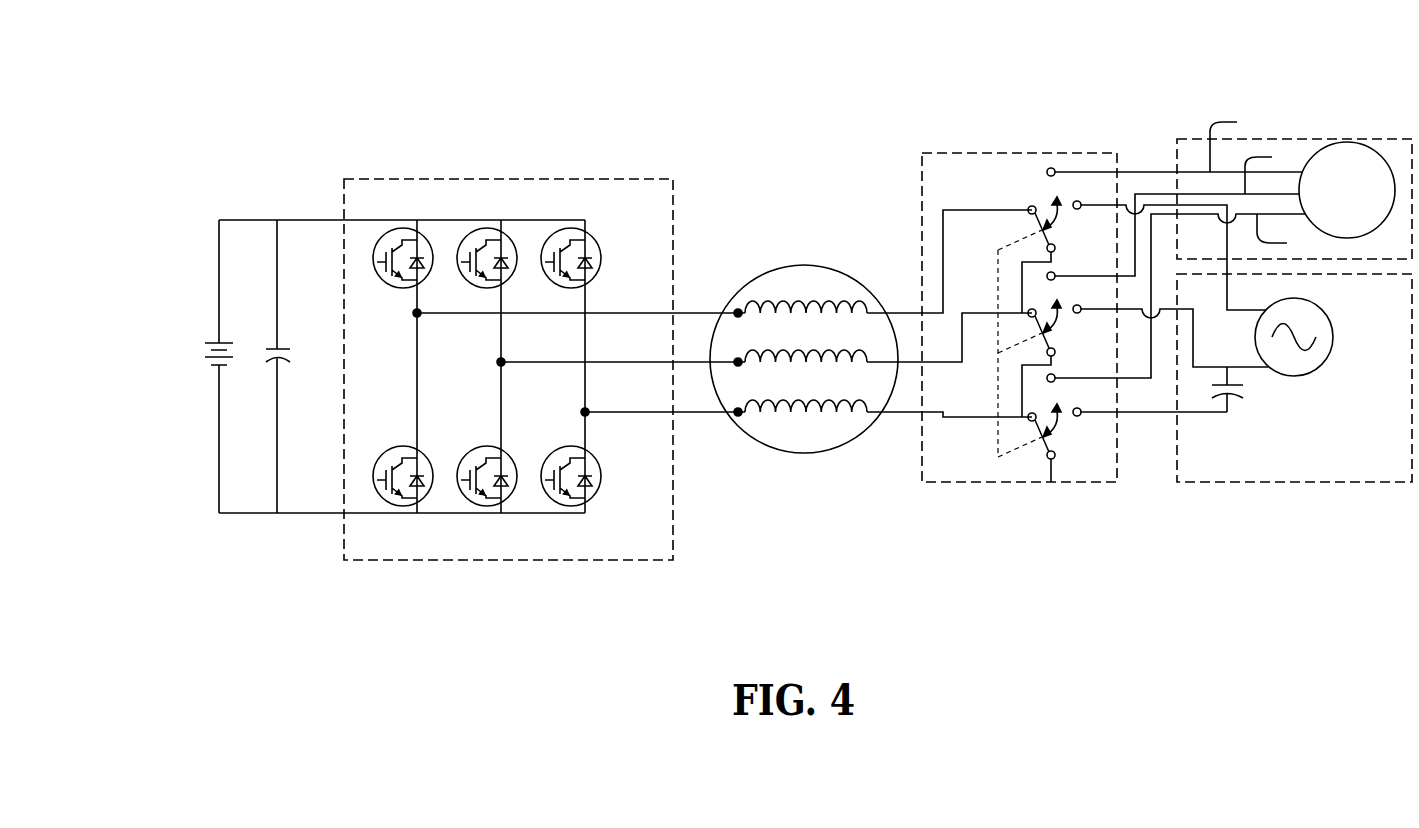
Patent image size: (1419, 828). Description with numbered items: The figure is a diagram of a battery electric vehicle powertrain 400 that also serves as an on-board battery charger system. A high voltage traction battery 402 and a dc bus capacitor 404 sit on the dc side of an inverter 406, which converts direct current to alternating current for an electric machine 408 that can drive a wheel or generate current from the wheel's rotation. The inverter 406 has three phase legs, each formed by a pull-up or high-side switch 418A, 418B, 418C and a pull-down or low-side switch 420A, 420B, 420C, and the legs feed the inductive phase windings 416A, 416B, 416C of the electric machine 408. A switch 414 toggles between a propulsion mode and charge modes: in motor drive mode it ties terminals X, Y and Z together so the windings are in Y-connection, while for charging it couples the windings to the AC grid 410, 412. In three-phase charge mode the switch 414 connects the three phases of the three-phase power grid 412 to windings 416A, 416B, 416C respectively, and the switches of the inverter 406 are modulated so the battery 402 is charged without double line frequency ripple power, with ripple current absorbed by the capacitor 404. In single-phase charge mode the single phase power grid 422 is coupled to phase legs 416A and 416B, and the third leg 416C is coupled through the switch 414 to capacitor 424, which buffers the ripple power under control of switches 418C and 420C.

The battery electric vehicle powertrain 400 is at (1107, 65).
The traction battery 402 is at (210, 340).
The dc bus capacitor 404 is at (282, 343).
The inverter 406 is at (503, 179).
The electric machine 408 is at (752, 280).
The AC power grid 410 is at (1275, 482).
The 3-phase power grid 412 is at (1300, 139).
The switch 414 is at (1015, 482).
The inductive winding 416A is at (785, 302).
The inductive winding 416B is at (783, 353).
The inductive winding 416C is at (783, 403).
The pull-up switch 418A is at (403, 228).
The pull-up switch 418B is at (487, 228).
The pull-up switch 418C is at (571, 228).
The pull-down switch 420A is at (403, 506).
The pull-down switch 420B is at (487, 506).
The pull-down switch 420C is at (571, 506).
The single phase power grid 422 is at (1313, 373).
The capacitor 424 is at (1234, 392).